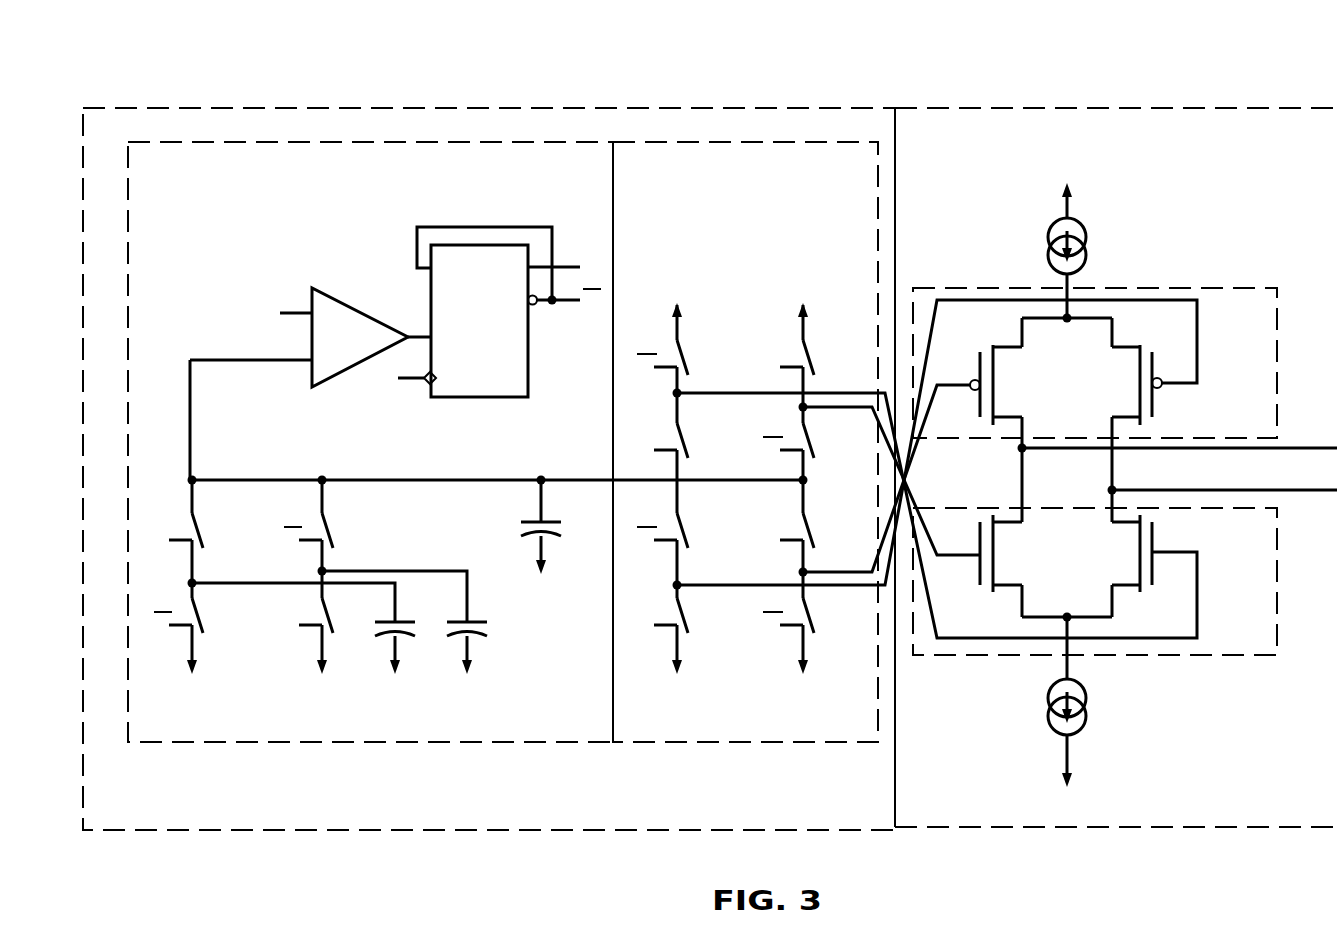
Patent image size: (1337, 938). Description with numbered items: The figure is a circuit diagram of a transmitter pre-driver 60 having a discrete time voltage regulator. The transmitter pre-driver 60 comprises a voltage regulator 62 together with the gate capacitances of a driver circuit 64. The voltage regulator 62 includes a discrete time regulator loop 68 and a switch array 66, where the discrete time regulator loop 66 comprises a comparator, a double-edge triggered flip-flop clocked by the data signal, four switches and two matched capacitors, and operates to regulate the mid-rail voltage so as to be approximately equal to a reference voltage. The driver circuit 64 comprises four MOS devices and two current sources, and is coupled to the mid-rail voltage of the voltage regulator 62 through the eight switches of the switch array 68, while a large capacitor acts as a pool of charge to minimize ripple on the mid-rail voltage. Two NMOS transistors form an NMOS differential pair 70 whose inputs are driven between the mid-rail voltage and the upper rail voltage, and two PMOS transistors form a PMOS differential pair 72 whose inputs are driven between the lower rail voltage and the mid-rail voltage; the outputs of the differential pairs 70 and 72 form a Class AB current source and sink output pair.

The transmitter pre-driver 60 is at (931, 74).
The voltage regulator 62 is at (582, 108).
The driver circuit 64 is at (1128, 107).
The discrete time regulator loop 66 is at (305, 142).
The switch array 68 is at (760, 142).
The NMOS differential pair 70 is at (1277, 572).
The PMOS differential pair 72 is at (1247, 288).